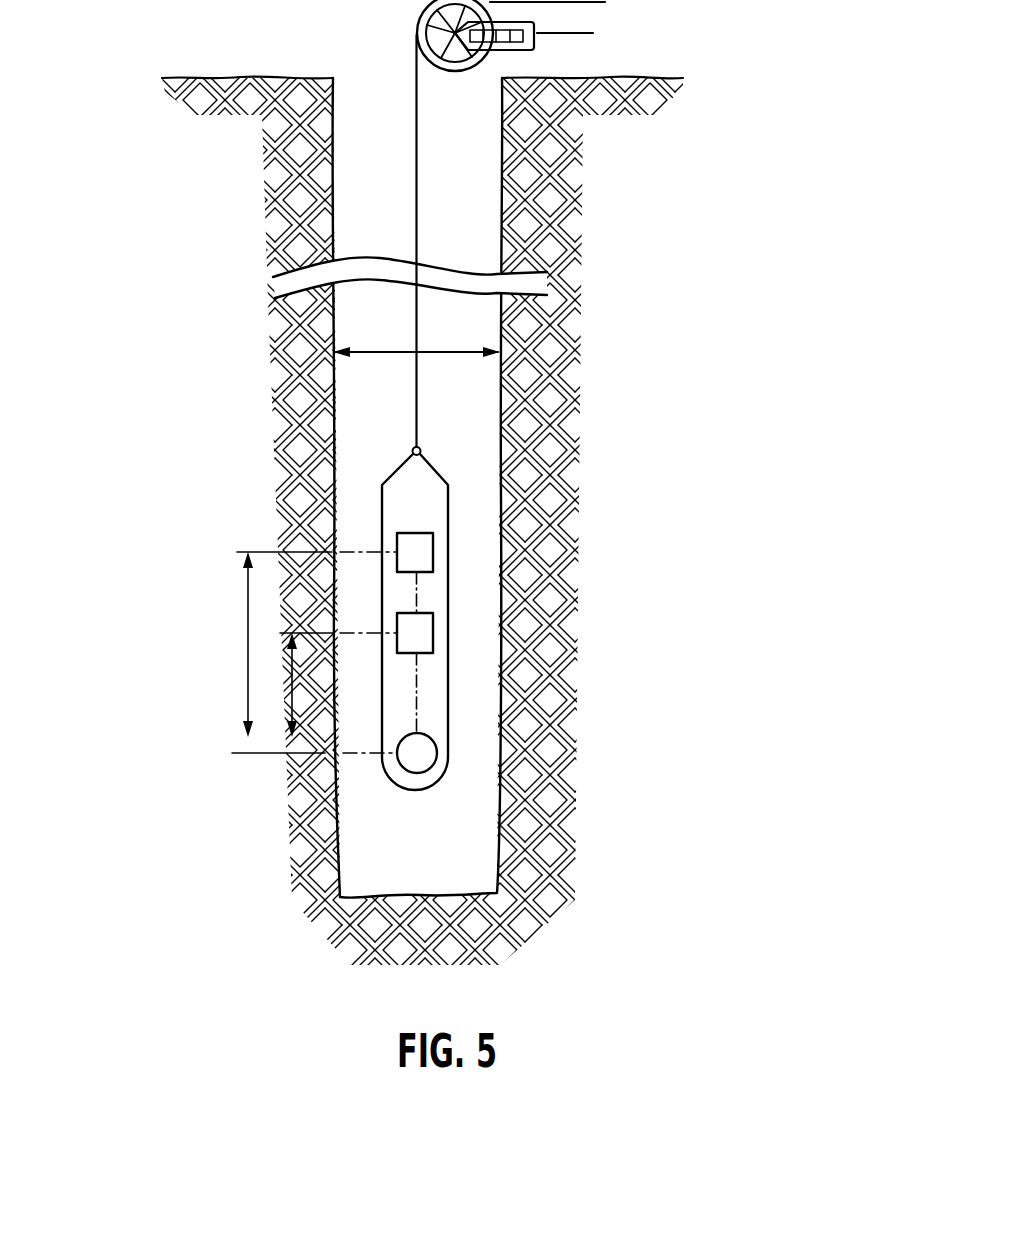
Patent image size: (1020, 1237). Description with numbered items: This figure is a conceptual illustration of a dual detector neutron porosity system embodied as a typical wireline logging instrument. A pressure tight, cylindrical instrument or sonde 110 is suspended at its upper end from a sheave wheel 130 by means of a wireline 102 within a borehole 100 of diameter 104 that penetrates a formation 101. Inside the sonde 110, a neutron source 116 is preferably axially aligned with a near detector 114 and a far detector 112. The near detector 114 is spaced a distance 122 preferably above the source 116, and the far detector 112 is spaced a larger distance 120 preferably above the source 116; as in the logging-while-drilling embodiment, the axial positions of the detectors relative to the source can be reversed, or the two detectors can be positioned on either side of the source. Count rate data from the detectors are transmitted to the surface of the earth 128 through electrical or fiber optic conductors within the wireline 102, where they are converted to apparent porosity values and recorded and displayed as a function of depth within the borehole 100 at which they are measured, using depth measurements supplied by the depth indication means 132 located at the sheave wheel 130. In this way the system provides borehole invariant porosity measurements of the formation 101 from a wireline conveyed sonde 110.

The borehole 100 is at (465, 197).
The formation 101 is at (297, 481).
The wireline 102 is at (416, 225).
The diameter 104 is at (433, 350).
The sonde 110 is at (393, 517).
The far detector 112 is at (433, 562).
The near detector 114 is at (433, 637).
The neutron source 116 is at (423, 770).
The distance 120 is at (247, 625).
The distance 122 is at (292, 695).
The surface of the earth 128 is at (233, 77).
The sheave wheel 130 is at (455, 71).
The depth indication means 132 is at (509, 50).